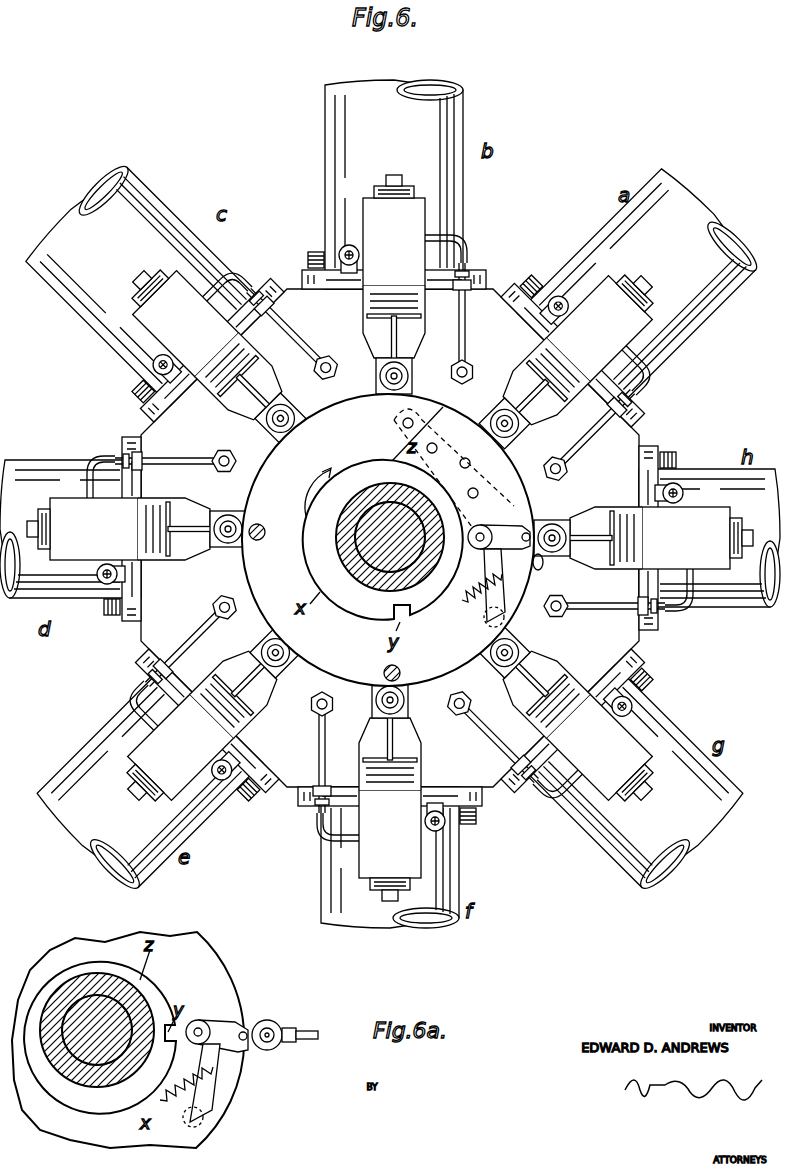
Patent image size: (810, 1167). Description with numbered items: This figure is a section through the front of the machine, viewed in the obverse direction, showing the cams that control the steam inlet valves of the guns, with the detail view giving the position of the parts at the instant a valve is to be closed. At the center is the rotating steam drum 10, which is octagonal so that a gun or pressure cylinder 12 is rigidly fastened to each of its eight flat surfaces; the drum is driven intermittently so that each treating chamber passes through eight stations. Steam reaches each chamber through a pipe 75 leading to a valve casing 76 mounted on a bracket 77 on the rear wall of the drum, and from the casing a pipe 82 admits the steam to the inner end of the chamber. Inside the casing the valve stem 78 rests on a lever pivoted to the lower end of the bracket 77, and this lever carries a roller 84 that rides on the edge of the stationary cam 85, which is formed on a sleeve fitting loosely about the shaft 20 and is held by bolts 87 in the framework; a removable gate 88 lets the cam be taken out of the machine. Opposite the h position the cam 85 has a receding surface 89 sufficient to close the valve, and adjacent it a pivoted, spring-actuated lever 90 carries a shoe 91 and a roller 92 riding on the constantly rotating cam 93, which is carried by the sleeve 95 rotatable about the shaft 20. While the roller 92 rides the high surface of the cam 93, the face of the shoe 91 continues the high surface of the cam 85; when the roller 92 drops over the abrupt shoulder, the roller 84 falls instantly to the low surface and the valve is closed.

In FIG. 6, the rotating steam drum 10 is at (490, 788).
In FIG. 6, the gun or pressure cylinder 12 is at (465, 192).
In FIG. 6, the shaft 20 is at (405, 560).
In FIG. 6A, the shaft 20 is at (97, 1030).
In FIG. 6, the pipe 75 is at (469, 331).
In FIG. 6, the valve casing 76 is at (426, 214).
In FIG. 6, the bracket 77 is at (602, 510).
In FIG. 6, the valve stem 78 is at (398, 338).
In FIG. 6, the pipe 82 is at (342, 250).
In FIG. 6, the roller 84 is at (410, 384).
In FIG. 6A, the roller 84 is at (272, 1022).
In FIG. 6, the cam 85 is at (522, 620).
In FIG. 6A, the cam 85 is at (207, 962).
In FIG. 6, the bolts 87 is at (259, 540).
In FIG. 6, the removable section or gate 88 is at (497, 458).
In FIG. 6, the receding surface 89 is at (541, 566).
In FIG. 6, the spring-actuated lever 90 is at (482, 616).
In FIG. 6A, the spring-actuated lever 90 is at (215, 1095).
In FIG. 6, the shoe 91 is at (528, 522).
In FIG. 6A, the shoe 91 is at (247, 1022).
In FIG. 6, the roller 92 is at (500, 512).
In FIG. 6A, the roller 92 is at (222, 1015).
In FIG. 6, the rotating cam 93 is at (357, 607).
In FIG. 6A, the rotating cam 93 is at (150, 990).
In FIG. 6, the sleeve 95 is at (382, 480).
In FIG. 6A, the sleeve 95 is at (110, 985).